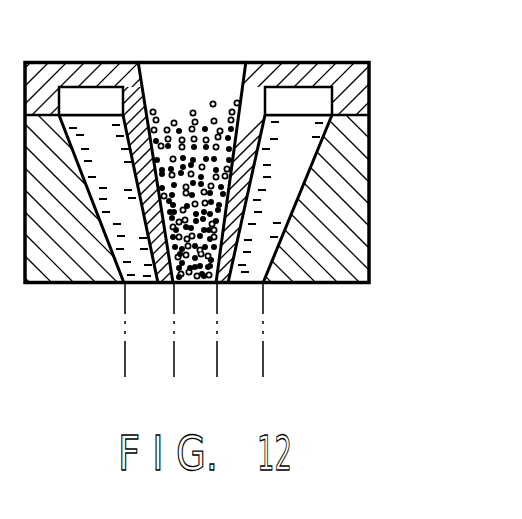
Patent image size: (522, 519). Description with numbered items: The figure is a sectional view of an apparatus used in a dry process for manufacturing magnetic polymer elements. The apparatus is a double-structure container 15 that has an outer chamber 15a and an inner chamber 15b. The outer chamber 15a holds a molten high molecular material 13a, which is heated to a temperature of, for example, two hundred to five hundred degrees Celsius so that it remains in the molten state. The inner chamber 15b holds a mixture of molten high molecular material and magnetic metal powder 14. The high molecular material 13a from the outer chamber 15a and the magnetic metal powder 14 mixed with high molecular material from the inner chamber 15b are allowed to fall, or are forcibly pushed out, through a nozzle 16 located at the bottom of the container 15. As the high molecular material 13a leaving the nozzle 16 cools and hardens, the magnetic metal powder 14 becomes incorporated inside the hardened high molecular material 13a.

The double-structure container 15 is at (369, 166).
The inner chamber 15b is at (145, 75).
The outer chamber 15a is at (313, 156).
The molten high molecular material 13a is at (277, 221).
The magnetic metal powder 14 is at (225, 108).
The nozzle 16 is at (273, 294).